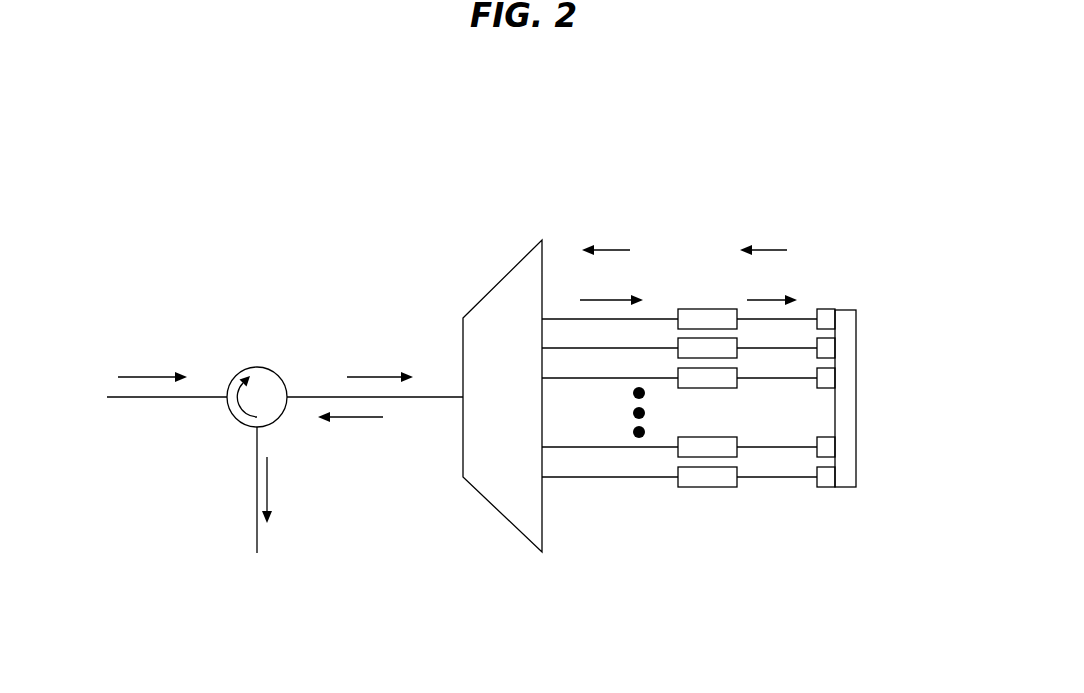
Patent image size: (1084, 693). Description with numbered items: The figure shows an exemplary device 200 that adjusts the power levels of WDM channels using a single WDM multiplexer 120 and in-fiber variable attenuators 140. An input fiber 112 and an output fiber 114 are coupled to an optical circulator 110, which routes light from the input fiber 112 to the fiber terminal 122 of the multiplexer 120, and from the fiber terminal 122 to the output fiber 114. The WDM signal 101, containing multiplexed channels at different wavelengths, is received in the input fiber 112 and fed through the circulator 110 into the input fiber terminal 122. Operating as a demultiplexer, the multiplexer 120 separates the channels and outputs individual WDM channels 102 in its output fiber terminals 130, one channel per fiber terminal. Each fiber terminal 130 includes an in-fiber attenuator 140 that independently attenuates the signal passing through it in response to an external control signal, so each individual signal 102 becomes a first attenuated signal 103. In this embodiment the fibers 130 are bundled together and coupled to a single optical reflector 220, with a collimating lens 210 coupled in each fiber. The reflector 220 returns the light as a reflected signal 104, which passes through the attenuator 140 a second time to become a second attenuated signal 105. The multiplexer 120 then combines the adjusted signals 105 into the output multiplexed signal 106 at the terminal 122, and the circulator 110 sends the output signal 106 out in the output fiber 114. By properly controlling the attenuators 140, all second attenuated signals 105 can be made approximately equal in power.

The device 200 is at (450, 176).
The WDM signal 101 is at (150, 378).
The individual WDM channels 102 is at (620, 300).
The first attenuated signal 103 is at (777, 300).
The reflected signal 104 is at (765, 250).
The second attenuated signal 105 is at (613, 250).
The multiplexed signal 106 is at (357, 418).
The optical circulator 110 is at (253, 368).
The input fiber 112 is at (168, 398).
The output fiber 114 is at (257, 473).
The WDM multiplexer 120 is at (502, 513).
The input fiber terminal 122 is at (437, 403).
The output fiber terminals 130 is at (612, 477).
The in-fiber attenuator 140 is at (708, 488).
The collimating lens 210 is at (827, 488).
The optical reflector 220 is at (845, 488).